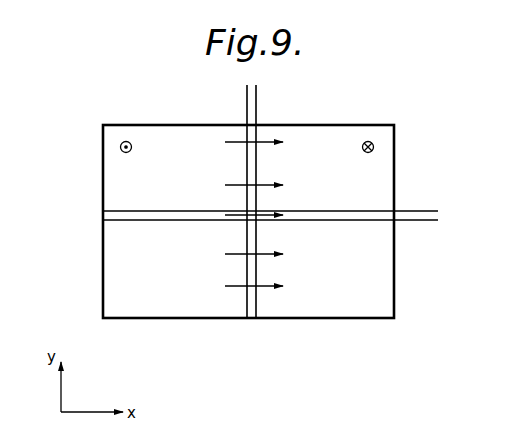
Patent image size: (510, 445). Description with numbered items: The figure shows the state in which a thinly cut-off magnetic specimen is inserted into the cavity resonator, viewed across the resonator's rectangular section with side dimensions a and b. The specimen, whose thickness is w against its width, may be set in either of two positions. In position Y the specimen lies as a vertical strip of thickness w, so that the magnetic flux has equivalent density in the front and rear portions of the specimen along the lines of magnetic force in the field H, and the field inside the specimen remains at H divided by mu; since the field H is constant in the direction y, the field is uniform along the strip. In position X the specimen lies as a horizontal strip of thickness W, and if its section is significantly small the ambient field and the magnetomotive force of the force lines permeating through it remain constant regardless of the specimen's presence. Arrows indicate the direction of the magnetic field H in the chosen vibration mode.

The specimen position Y is at (247, 157).
The specimen position X is at (321, 211).
The magnetic field H is at (283, 286).
The specimen thickness w is at (213, 90).
The specimen thickness W is at (433, 245).
The section dimension a is at (394, 378).
The section dimension b is at (98, 318).